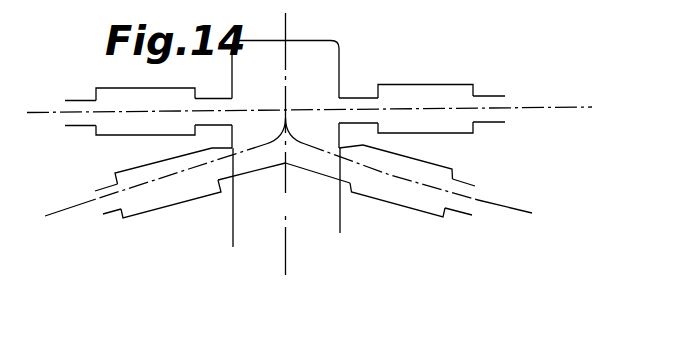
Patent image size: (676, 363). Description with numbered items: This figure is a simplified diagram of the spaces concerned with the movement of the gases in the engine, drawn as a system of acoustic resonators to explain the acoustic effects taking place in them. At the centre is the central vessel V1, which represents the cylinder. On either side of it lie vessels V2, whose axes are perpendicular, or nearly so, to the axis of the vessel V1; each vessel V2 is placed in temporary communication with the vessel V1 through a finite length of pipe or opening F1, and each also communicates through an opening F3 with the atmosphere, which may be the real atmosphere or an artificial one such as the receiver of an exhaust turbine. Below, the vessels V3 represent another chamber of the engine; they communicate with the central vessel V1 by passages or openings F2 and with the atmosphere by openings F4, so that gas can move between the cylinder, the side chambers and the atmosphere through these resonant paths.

The central vessel V1 is at (285, 144).
The vessels V2 is at (284, 110).
The vessels V3 is at (284, 181).
The pipe or opening F1 is at (286, 111).
The passages or openings F2 is at (285, 172).
The openings F3 is at (285, 111).
The openings F4 is at (288, 198).